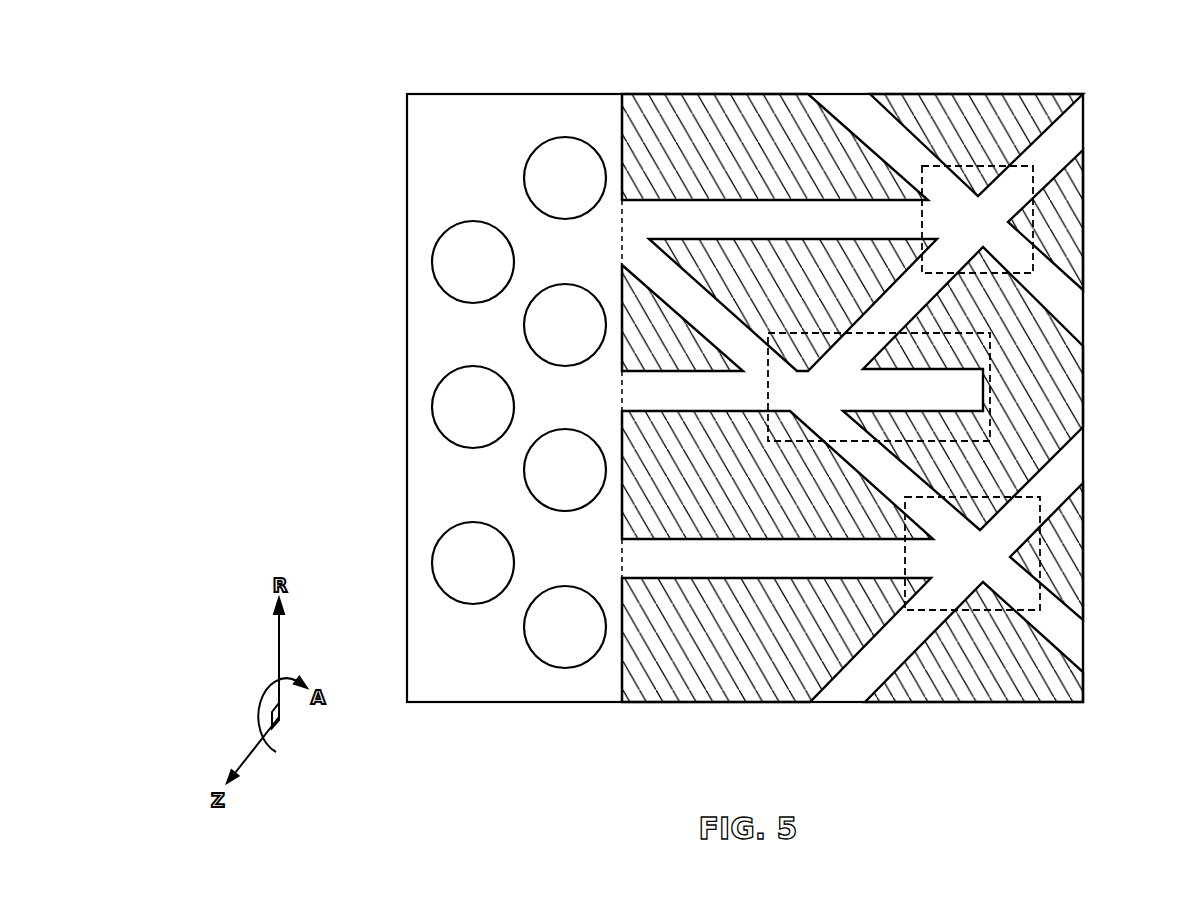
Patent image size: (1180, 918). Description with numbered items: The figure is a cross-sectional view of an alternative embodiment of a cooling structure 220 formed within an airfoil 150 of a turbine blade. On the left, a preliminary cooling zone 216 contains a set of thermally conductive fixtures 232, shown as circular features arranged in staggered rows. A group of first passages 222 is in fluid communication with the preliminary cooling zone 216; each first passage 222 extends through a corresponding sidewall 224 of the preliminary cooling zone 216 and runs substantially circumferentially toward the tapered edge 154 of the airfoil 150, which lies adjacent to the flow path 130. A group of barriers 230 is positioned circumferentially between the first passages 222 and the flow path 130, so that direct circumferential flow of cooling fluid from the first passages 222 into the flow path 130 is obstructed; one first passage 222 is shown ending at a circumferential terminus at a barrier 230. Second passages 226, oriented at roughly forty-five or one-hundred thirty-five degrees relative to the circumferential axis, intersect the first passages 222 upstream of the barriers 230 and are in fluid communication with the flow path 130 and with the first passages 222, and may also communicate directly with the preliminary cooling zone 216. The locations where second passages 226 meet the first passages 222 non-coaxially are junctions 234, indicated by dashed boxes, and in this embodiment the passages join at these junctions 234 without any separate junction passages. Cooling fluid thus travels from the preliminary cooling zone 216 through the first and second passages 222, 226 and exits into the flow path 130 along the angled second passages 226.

The flow path 130 is at (1165, 411).
The airfoil 150 is at (704, 94).
The tapered edge 154 is at (1083, 172).
The preliminary cooling zone 216 is at (450, 174).
The cooling structure 220 is at (470, 76).
The first passages 222 is at (757, 218).
The sidewall 224 is at (637, 133).
The second passages 226 is at (875, 133).
The barriers 230 is at (1068, 220).
The thermally conductive fixtures 232 is at (553, 168).
The junctions 234 is at (968, 165).